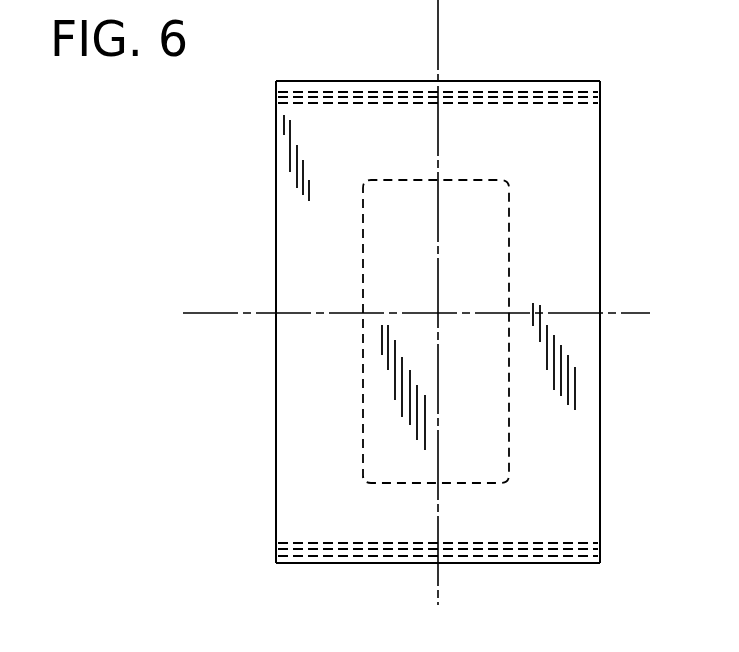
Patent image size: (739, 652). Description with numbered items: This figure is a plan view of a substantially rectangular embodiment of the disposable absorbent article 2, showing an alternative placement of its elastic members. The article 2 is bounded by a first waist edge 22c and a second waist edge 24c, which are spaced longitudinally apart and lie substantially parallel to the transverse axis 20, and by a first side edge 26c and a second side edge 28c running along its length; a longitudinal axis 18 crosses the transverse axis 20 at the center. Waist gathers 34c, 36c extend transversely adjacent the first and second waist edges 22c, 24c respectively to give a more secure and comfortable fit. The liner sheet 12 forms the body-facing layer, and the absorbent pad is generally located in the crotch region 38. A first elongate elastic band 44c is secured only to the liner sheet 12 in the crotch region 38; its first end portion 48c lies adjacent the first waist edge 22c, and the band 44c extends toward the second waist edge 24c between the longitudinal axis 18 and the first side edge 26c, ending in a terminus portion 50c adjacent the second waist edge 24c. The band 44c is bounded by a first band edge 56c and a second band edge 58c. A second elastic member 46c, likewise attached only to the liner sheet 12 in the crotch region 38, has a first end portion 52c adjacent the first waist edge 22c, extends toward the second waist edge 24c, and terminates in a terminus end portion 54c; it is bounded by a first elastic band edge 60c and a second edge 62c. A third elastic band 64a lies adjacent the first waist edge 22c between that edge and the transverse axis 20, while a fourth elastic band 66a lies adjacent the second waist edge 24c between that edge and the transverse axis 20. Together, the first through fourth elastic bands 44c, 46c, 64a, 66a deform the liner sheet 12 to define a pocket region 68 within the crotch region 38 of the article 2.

The absorbent article 2 is at (240, 168).
The liner sheet 12 is at (362, 528).
The longitudinal axis 18 is at (435, 66).
The transverse axis 20 is at (237, 315).
The first waist edge 22c is at (555, 81).
The second waist edge 24c is at (512, 563).
The first side edge 26c is at (276, 120).
The second side edge 28c is at (597, 147).
The waist gather 34c is at (473, 90).
The waist gather 36c is at (580, 555).
The crotch region 38 is at (467, 483).
The first elongate elastic band 44c is at (355, 365).
The second elastic member 46c is at (509, 235).
The first end portion 48c is at (363, 180).
The terminus portion 50c is at (363, 480).
The first end portion 52c is at (509, 180).
The terminus end portion 54c is at (562, 468).
The first band edge 56c is at (352, 287).
The second band edge 58c is at (363, 238).
The first elastic band edge 60c is at (509, 206).
The second edge 62c is at (509, 220).
The third elastic band 64a is at (410, 180).
The fourth elastic band 66a is at (425, 485).
The pocket region 68 is at (383, 417).